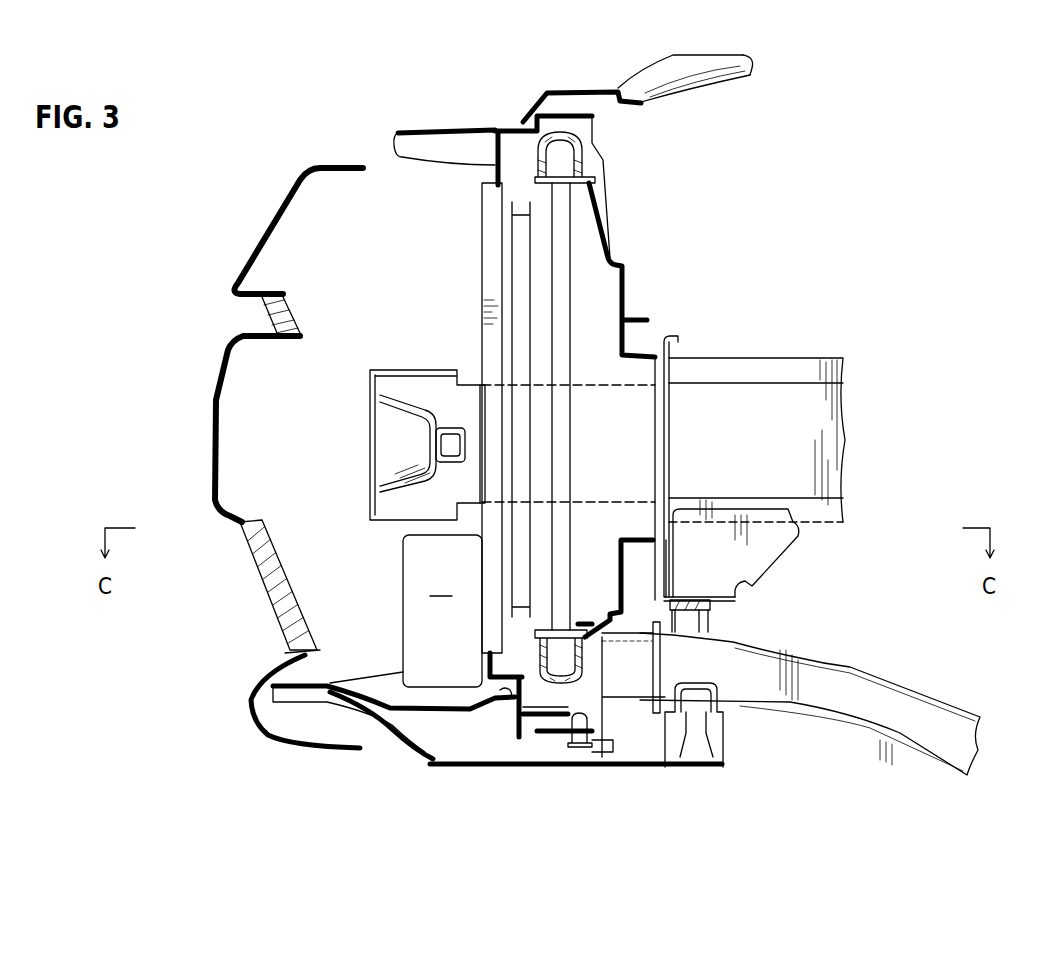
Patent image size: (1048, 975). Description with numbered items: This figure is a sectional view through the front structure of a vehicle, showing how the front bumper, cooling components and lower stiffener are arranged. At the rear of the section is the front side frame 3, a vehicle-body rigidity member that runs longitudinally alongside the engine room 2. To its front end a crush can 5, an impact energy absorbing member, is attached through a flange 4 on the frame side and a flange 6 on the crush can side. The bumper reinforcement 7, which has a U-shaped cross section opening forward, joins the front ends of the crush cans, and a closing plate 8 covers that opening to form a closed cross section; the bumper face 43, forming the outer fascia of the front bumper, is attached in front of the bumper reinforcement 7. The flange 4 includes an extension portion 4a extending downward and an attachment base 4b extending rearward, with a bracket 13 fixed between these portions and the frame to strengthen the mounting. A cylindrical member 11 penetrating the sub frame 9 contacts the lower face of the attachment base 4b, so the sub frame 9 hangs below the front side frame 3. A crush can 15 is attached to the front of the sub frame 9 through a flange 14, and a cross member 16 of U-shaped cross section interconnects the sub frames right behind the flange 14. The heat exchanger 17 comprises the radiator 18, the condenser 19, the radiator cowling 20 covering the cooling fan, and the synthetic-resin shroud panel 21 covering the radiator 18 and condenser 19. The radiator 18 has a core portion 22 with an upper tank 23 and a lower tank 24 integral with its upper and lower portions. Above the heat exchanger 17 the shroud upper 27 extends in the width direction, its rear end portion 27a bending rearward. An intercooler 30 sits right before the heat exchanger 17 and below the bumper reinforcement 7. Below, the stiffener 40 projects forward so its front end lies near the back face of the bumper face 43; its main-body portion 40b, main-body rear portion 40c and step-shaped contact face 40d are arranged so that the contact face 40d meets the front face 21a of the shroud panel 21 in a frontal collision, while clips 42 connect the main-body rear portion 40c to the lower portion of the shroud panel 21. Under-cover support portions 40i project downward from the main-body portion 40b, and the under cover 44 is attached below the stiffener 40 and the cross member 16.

The engine room 2 is at (783, 232).
The front side frame 3 is at (775, 347).
The flange 4 is at (672, 437).
The extension portion 4a is at (673, 565).
The attachment base 4b is at (715, 605).
The crush can 5 is at (470, 378).
The flange 6 is at (665, 408).
The bumper reinforcement 7 is at (400, 485).
The closing plate 8 is at (370, 406).
The sub frame 9 is at (850, 668).
The cylindrical member 11 is at (708, 625).
The bracket 13 is at (775, 568).
The flange 14 is at (650, 670).
The crush can 15 is at (640, 645).
The cross member 16 is at (725, 735).
The heat exchanger 17 is at (473, 236).
The radiator 18 is at (577, 429).
The condenser 19 is at (512, 263).
The radiator cowling 20 is at (623, 287).
The shroud panel 21 is at (553, 112).
The front face 21a is at (530, 700).
The core portion 22 is at (553, 349).
The upper tank 23 is at (590, 160).
The lower tank 24 is at (540, 650).
The shroud upper 27 is at (600, 92).
The rear end portion 27a is at (752, 66).
The intercooler 30 is at (442, 611).
The stiffener 40 is at (264, 699).
The main-body portion 40b is at (353, 692).
The main-body rear portion 40c is at (545, 735).
The contact face 40d is at (520, 713).
The under-cover support portion 40i is at (272, 734).
The clip 42 is at (581, 747).
The bumper face 43 is at (213, 440).
The under cover 44 is at (468, 767).